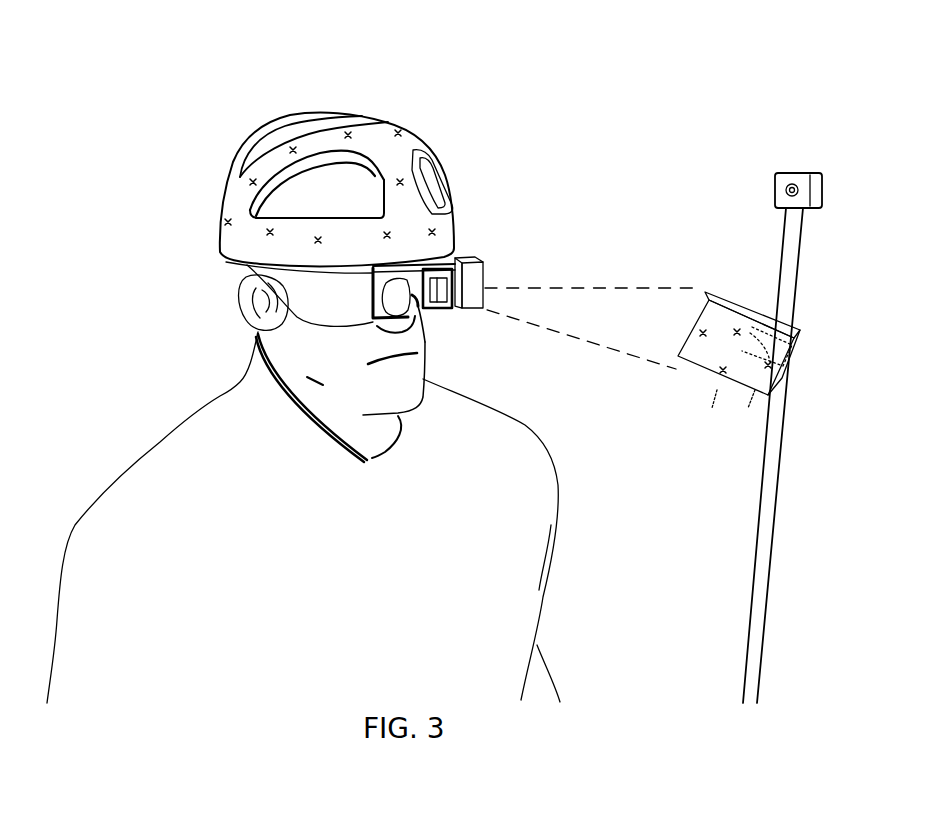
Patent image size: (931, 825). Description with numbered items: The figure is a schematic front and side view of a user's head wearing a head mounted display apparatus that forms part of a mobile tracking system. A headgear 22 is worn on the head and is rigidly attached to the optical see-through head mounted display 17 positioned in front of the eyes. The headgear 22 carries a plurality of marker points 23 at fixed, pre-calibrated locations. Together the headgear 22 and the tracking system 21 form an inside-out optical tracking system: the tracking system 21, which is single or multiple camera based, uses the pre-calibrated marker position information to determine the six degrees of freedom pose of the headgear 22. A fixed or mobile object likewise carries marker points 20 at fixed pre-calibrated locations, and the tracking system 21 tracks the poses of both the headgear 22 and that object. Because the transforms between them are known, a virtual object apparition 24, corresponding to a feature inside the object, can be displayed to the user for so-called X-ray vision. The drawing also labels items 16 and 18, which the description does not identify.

The user 16 is at (241, 300).
The head mounted display 17 is at (486, 264).
The tracked object 18 is at (735, 292).
The marker points 20 is at (748, 408).
The tracking system 21 is at (784, 172).
The headgear 22 is at (220, 190).
The marker points 23 is at (350, 130).
The virtual object apparition 24 is at (790, 350).